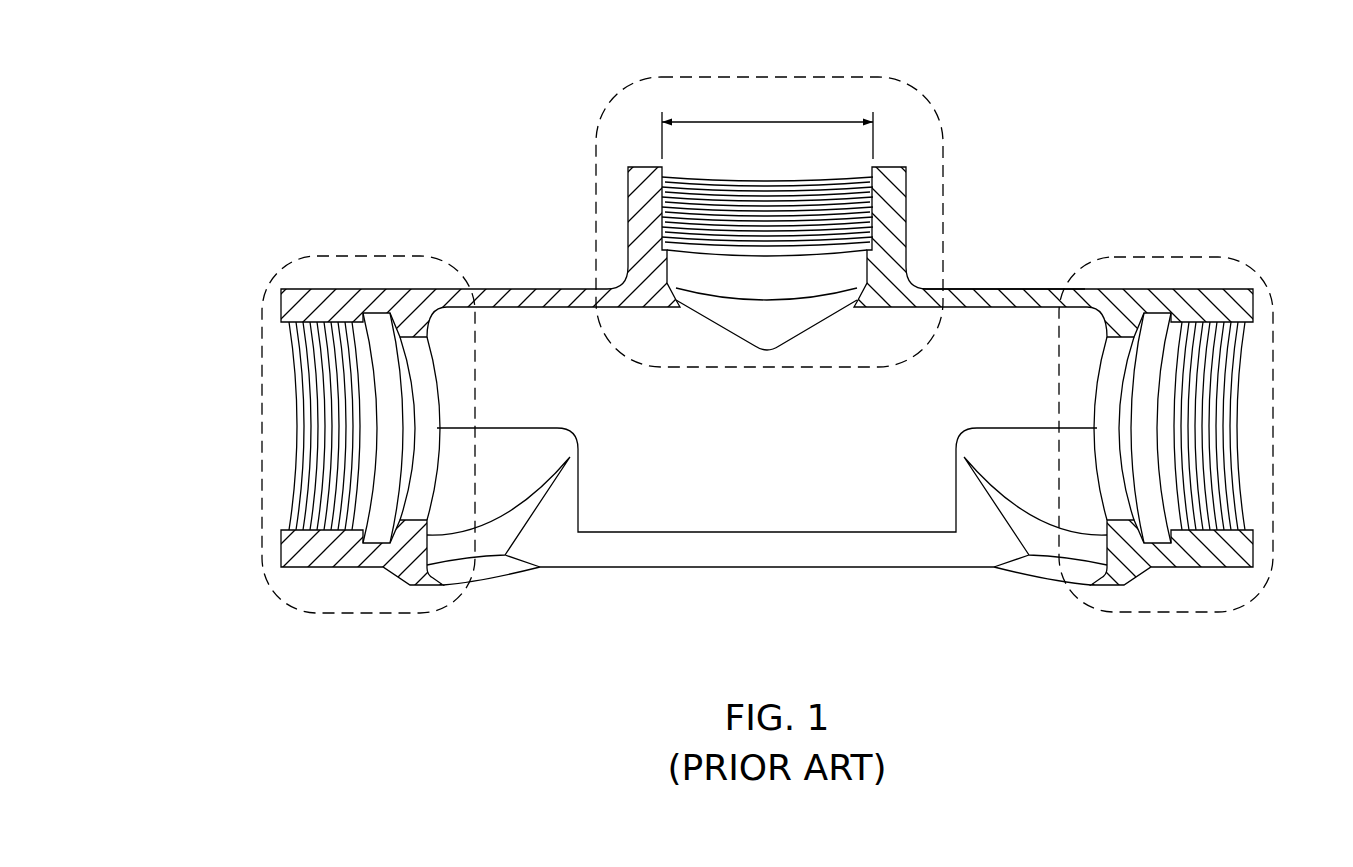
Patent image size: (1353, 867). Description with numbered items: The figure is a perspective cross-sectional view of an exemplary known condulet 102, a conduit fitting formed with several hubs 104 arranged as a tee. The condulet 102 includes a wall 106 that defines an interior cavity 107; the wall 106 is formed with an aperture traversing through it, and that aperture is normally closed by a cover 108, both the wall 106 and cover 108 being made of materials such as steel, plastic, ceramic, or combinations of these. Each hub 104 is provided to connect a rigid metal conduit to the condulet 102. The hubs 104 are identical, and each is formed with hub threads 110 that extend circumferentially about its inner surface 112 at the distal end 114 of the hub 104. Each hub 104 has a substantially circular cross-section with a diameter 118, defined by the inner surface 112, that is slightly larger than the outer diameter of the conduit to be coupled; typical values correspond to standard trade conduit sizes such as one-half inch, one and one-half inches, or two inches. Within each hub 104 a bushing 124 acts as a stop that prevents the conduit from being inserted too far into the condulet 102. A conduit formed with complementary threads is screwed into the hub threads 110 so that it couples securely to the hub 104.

The condulet 102 is at (238, 290).
The hub 104 is at (815, 78).
The wall 106 is at (998, 288).
The cavity 107 is at (974, 278).
The cover 108 is at (846, 582).
The hub threads 110 is at (1220, 427).
The inner surface 112 is at (1152, 523).
The distal end 114 is at (1182, 300).
The diameter 118 is at (807, 125).
The bushing 124 is at (1110, 467).